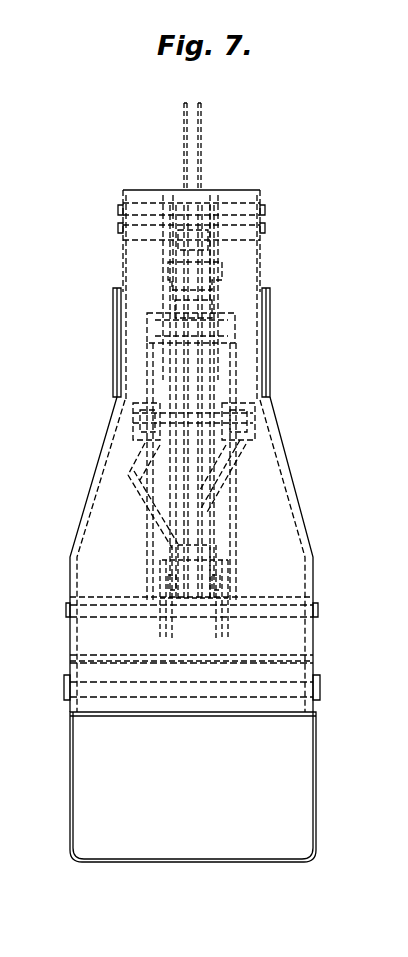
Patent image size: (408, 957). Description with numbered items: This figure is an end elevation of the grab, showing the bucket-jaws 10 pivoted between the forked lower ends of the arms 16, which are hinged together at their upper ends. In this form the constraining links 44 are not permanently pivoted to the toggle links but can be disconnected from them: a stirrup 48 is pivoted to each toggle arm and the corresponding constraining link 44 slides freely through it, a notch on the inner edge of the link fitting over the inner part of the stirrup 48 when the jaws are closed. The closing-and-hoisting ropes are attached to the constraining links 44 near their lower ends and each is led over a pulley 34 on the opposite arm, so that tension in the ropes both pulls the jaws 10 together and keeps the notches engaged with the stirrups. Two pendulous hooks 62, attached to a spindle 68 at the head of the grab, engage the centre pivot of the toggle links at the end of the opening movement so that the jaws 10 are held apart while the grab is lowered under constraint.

The bucket-jaw 10 is at (83, 770).
The arm 16 is at (98, 580).
The pulley 34 is at (218, 588).
The constraining link 44 is at (237, 365).
The stirrup 48 is at (143, 445).
The pendulous hook 62 is at (168, 303).
The spindle 68 is at (217, 272).